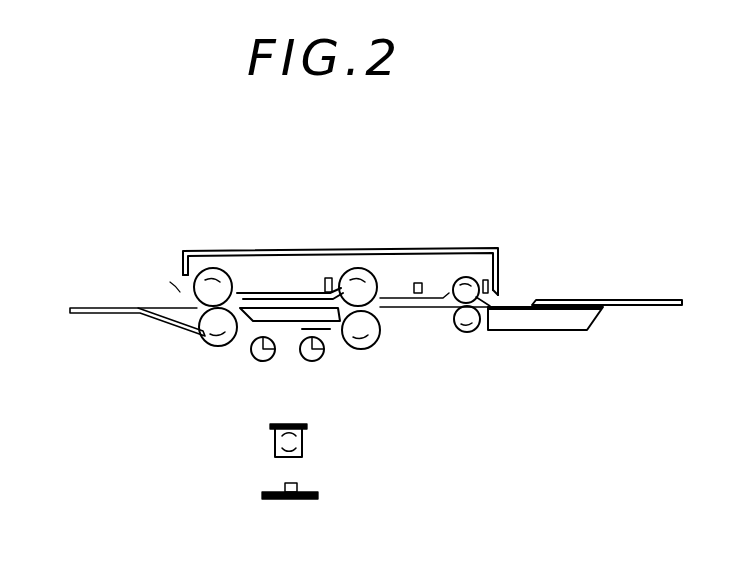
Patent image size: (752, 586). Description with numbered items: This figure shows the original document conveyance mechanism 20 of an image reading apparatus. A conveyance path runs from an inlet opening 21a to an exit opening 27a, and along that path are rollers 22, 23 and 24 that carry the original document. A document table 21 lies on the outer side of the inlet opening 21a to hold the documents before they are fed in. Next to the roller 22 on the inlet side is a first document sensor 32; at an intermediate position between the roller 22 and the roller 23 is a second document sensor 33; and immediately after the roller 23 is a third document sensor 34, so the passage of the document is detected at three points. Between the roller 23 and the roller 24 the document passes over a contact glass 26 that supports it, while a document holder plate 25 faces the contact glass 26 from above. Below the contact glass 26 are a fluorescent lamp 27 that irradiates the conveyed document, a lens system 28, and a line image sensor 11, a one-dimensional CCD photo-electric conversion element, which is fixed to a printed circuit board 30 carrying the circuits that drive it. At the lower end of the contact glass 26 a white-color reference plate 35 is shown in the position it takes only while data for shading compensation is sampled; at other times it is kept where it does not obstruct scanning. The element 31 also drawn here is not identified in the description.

The line image sensor 11 is at (297, 483).
The original document conveyance mechanism 20 is at (514, 245).
The document table 21 is at (565, 324).
The inlet opening 21a is at (502, 300).
The roller 22 is at (480, 298).
The roller 23 is at (382, 298).
The roller 24 is at (208, 292).
The document holder plate 25 is at (281, 296).
The contact glass 26 is at (253, 318).
The fluorescent lamp 27 is at (100, 307).
The exit opening 27a is at (178, 291).
The lens system 28 is at (305, 440).
The printed circuit board 30 is at (300, 500).
The cover plate 31 is at (588, 299).
The first document sensor 32 is at (485, 280).
The second document sensor 33 is at (418, 283).
The third document sensor 34 is at (329, 278).
The white-color reference plate 35 is at (330, 329).